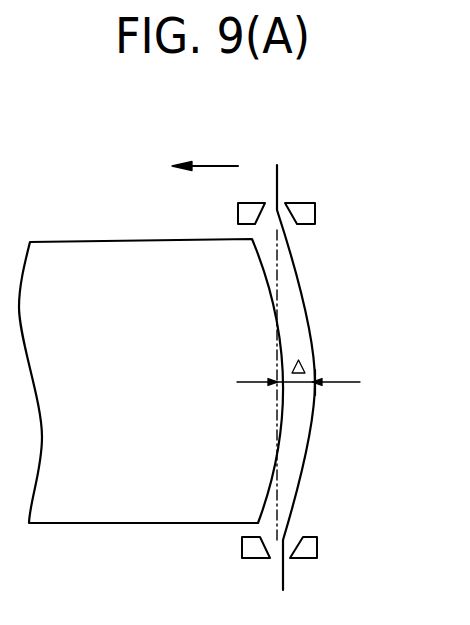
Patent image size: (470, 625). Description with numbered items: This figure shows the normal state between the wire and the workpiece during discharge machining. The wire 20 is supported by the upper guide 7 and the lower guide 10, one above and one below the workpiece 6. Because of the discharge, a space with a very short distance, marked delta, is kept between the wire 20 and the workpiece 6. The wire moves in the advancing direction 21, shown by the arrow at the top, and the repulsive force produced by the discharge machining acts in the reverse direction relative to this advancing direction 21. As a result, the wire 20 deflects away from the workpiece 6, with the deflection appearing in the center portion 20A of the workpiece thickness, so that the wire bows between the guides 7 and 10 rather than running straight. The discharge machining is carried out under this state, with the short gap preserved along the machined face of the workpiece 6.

The workpiece 6 is at (88, 241).
The upper guide 7 is at (238, 217).
The lower guide 10 is at (248, 558).
The wire 20 is at (310, 301).
The center portion 20A is at (315, 395).
The advancing direction 21 is at (197, 166).